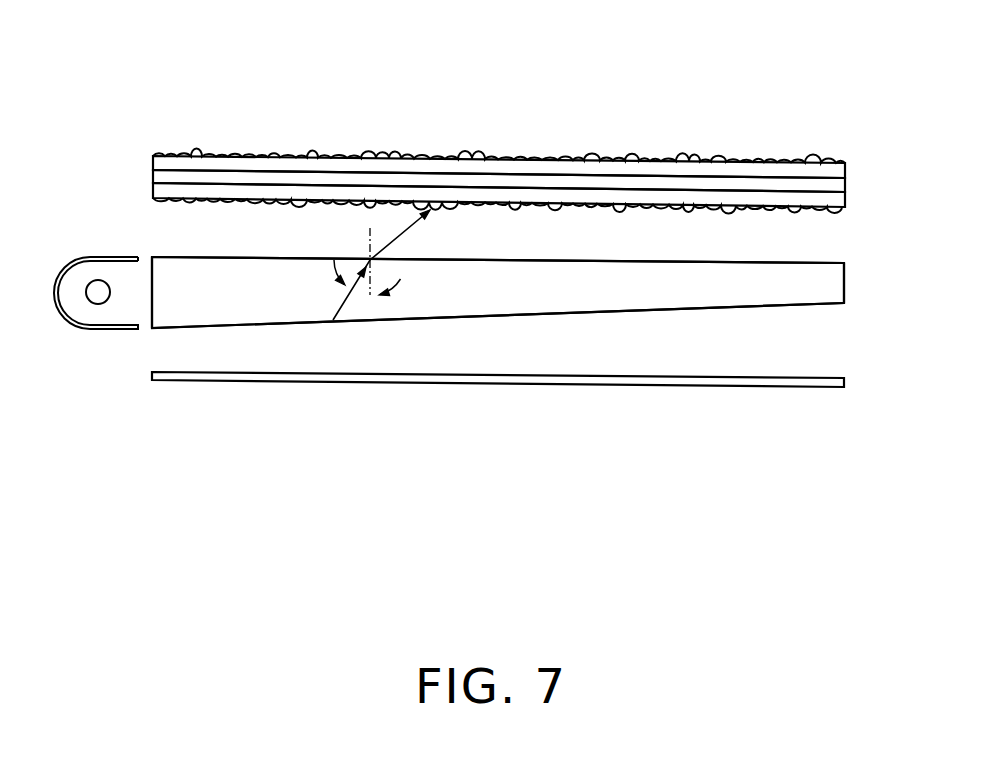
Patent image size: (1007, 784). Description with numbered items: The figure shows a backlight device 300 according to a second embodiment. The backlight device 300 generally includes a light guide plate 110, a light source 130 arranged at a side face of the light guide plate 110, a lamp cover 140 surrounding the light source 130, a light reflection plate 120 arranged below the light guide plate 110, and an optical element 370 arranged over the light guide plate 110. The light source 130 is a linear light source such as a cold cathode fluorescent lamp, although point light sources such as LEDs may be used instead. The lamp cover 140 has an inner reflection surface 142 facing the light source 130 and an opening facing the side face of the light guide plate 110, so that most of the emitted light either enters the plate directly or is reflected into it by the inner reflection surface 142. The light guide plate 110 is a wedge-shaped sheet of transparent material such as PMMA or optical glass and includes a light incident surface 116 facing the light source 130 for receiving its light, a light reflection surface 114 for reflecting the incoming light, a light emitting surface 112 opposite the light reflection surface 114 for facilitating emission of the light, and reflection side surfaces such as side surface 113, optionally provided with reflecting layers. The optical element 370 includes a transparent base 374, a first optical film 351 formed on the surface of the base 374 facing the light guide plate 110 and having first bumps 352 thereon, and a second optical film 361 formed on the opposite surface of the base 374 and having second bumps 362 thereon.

The backlight device 300 is at (596, 44).
The optical element 370 is at (146, 170).
The second optical film 361 is at (845, 165).
The second bumps 362 is at (670, 160).
The transparent base 374 is at (840, 188).
The first optical film 351 is at (840, 198).
The first bumps 352 is at (732, 211).
The light guide plate 110 is at (841, 311).
The light emitting surface 112 is at (817, 263).
The side surface 113 is at (846, 283).
The light reflection surface 114 is at (778, 307).
The light incident surface 116 is at (152, 288).
The light reflection plate 120 is at (813, 382).
The light source 130 is at (97, 288).
The lamp cover 140 is at (90, 258).
The inner reflection surface 142 is at (108, 320).